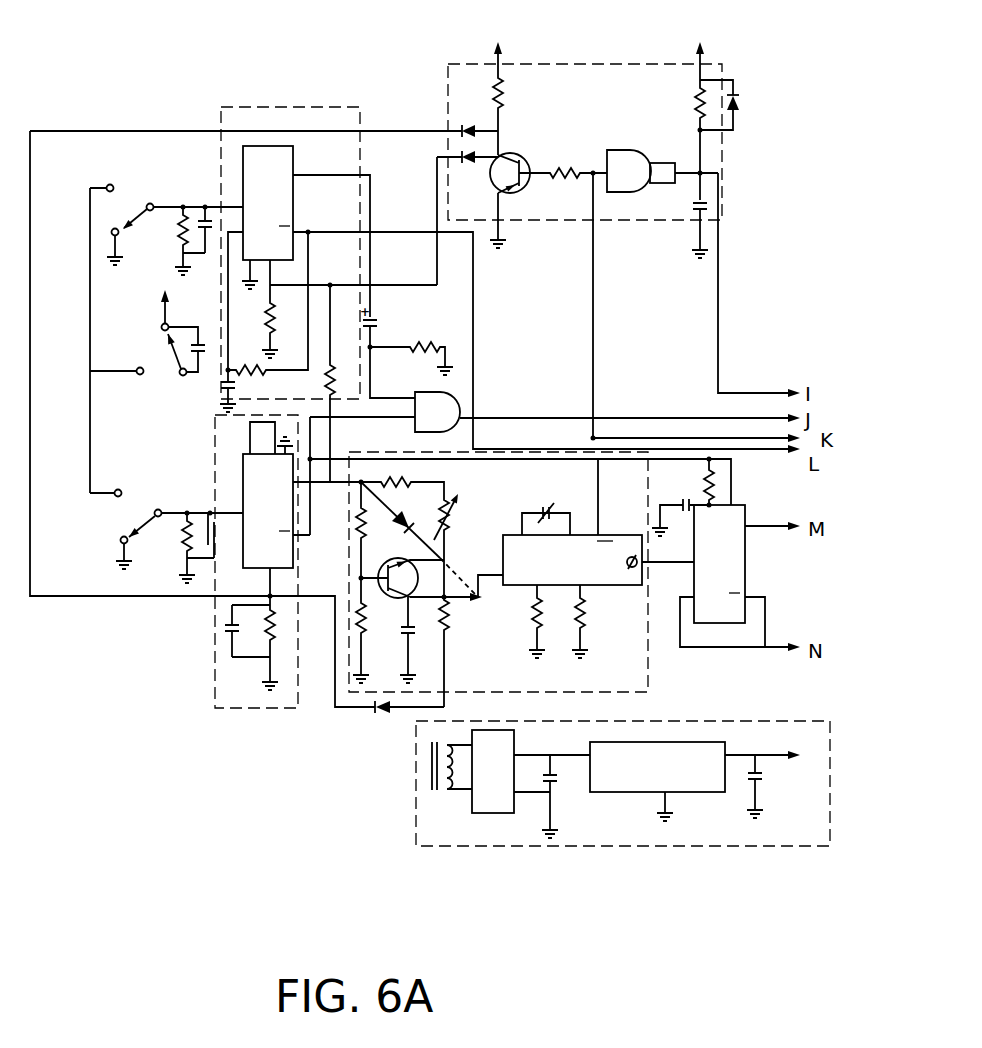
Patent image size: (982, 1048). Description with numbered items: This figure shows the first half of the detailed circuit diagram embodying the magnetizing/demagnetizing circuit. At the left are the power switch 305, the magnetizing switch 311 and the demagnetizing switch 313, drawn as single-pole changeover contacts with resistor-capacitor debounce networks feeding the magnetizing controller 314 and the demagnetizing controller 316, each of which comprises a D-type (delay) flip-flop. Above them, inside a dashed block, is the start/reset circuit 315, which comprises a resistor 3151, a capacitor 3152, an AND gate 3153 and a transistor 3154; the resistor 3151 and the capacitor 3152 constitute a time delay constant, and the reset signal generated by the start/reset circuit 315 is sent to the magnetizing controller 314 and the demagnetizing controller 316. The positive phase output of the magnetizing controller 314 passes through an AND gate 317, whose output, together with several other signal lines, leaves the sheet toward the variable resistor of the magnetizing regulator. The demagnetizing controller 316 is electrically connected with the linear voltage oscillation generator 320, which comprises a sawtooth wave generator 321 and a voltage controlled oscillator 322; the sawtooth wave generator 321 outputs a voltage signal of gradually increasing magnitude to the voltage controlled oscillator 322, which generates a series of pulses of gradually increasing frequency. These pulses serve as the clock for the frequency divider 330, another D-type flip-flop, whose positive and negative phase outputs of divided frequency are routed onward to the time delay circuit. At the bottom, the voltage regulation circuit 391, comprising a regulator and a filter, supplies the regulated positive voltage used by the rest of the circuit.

The power switch 305 is at (170, 362).
The magnetizing switch 311 is at (132, 197).
The demagnetizing switch 313 is at (146, 545).
The magnetizing controller 314 is at (318, 105).
The start/reset circuit 315 is at (593, 145).
The resistor 3151 is at (690, 108).
The capacitor 3152 is at (695, 225).
The AND gate 3153 is at (628, 150).
The transistor 3154 is at (524, 163).
The demagnetizing controller 316 is at (243, 712).
The AND gate 317 is at (450, 395).
The linear voltage oscillation generator 320 is at (493, 604).
The sawtooth wave generator 321 is at (462, 632).
The voltage controlled oscillator 322 is at (618, 587).
The frequency divider 330 is at (713, 625).
The voltage regulation circuit 391 is at (640, 849).